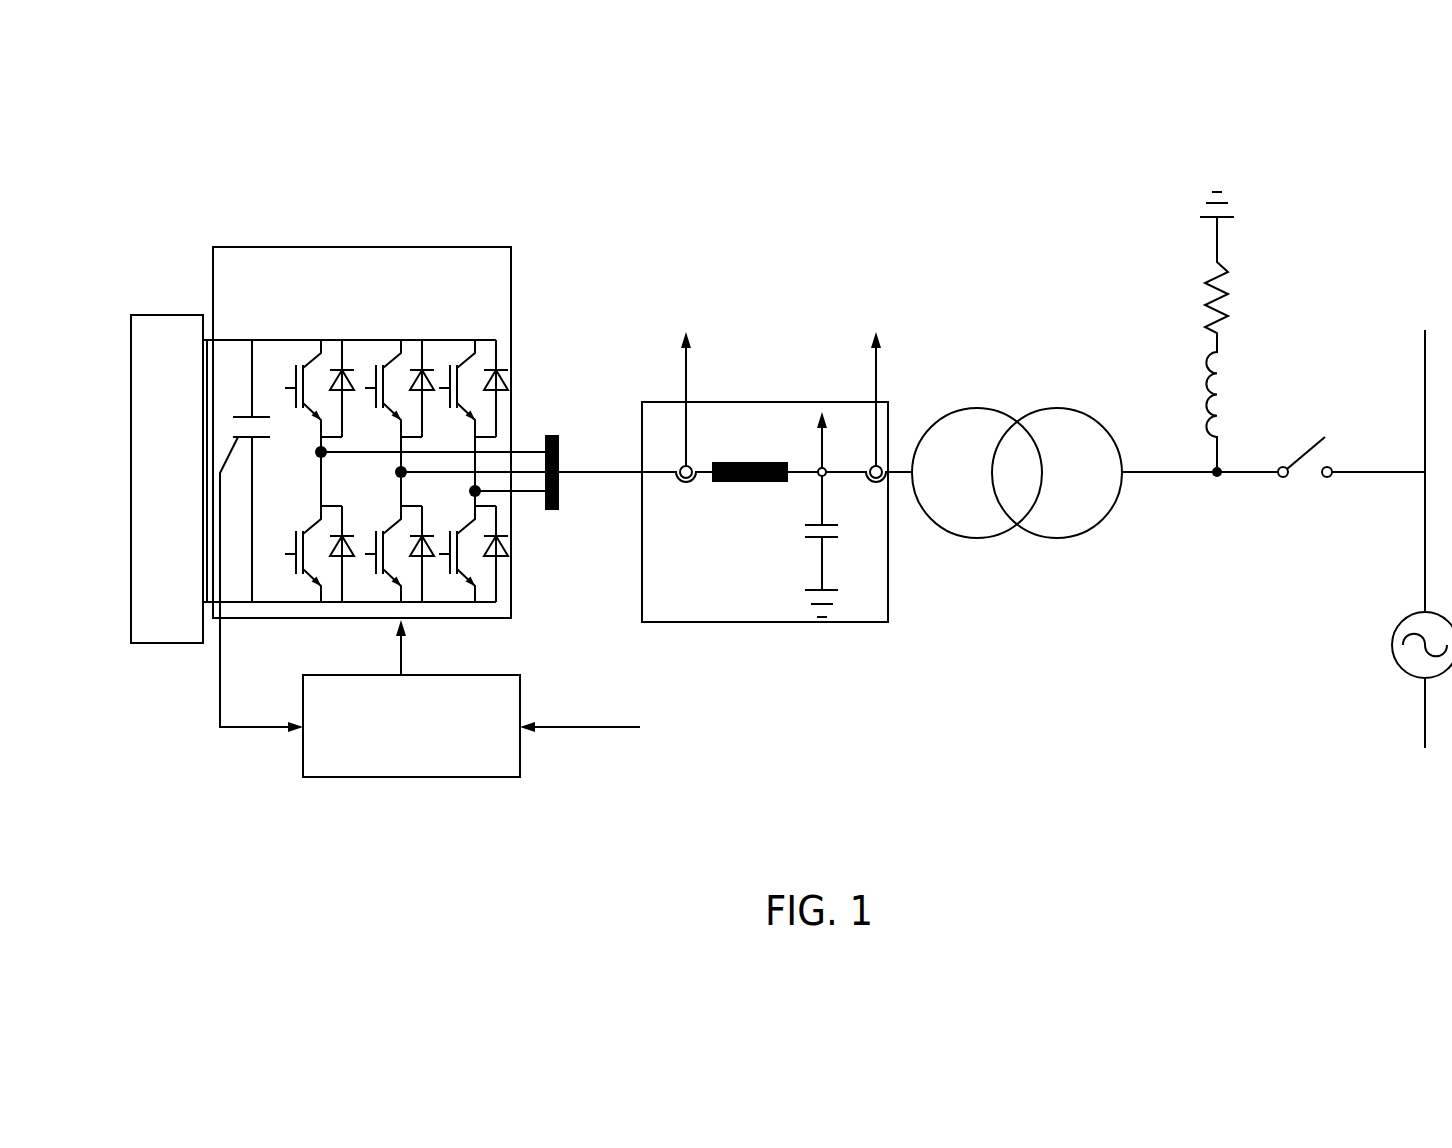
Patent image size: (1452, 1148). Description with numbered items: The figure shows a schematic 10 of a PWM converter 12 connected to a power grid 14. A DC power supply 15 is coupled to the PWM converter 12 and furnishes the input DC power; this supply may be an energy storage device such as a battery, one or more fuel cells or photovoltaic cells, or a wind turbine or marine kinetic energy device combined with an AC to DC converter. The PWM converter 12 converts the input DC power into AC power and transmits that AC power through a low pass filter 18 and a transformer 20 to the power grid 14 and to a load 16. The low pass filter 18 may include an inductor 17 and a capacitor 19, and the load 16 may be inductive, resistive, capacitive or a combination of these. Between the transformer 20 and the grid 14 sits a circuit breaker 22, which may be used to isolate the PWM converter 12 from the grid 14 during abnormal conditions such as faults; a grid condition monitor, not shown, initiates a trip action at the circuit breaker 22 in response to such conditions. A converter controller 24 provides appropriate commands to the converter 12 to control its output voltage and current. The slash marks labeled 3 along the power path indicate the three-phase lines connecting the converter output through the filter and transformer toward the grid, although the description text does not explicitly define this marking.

The schematic 10 is at (1328, 130).
The PWM converter 12 is at (348, 247).
The power grid 14 is at (1425, 367).
The DC power supply 15 is at (167, 313).
The load 16 is at (1207, 282).
The inductor 17 is at (733, 482).
The low pass filter 18 is at (825, 514).
The capacitor 19 is at (842, 546).
The transformer 20 is at (1063, 407).
The circuit breaker 22 is at (1313, 476).
The converter controller 24 is at (377, 777).
The three-phase line 3 is at (665, 457).